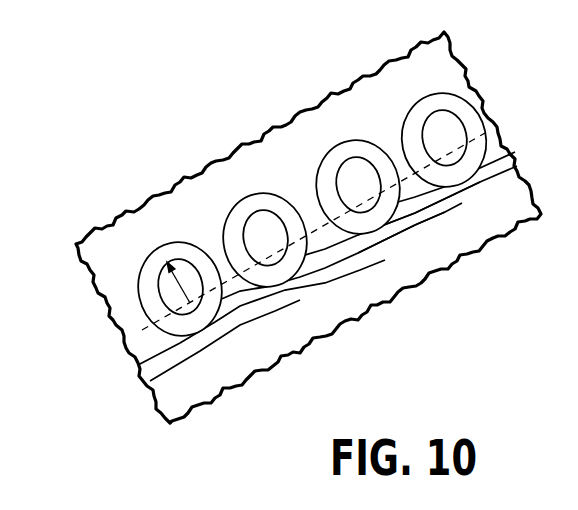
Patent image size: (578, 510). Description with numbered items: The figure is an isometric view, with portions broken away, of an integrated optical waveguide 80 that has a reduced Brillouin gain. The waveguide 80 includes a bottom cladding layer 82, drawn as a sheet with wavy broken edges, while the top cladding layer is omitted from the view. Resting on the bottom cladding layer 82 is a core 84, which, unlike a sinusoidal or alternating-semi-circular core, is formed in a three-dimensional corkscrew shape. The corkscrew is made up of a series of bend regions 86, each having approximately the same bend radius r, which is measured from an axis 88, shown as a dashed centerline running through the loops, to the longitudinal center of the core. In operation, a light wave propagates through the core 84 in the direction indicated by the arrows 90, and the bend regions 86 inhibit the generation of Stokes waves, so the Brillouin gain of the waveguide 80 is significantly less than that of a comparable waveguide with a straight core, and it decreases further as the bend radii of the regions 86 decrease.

The integrated optical waveguide 80 is at (299, 227).
The bottom cladding layer 82 is at (128, 216).
The core 84 is at (241, 338).
The bend regions 86 is at (231, 199).
The axis 88 is at (142, 330).
The arrows 90 is at (354, 152).